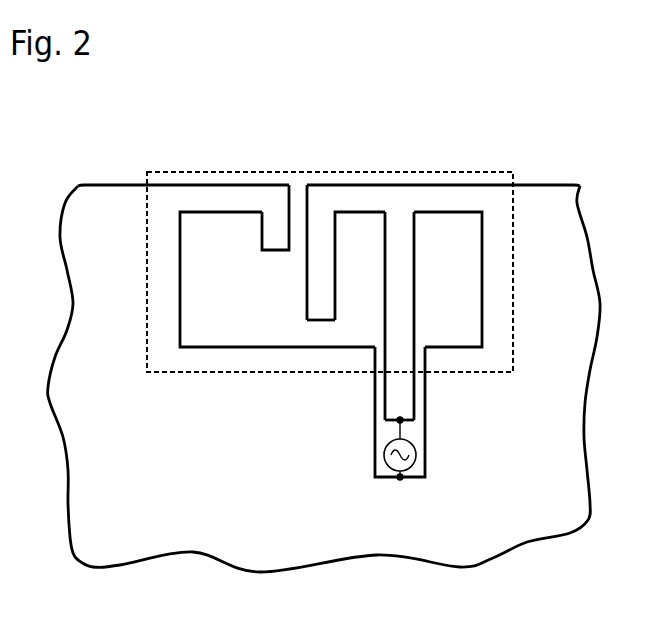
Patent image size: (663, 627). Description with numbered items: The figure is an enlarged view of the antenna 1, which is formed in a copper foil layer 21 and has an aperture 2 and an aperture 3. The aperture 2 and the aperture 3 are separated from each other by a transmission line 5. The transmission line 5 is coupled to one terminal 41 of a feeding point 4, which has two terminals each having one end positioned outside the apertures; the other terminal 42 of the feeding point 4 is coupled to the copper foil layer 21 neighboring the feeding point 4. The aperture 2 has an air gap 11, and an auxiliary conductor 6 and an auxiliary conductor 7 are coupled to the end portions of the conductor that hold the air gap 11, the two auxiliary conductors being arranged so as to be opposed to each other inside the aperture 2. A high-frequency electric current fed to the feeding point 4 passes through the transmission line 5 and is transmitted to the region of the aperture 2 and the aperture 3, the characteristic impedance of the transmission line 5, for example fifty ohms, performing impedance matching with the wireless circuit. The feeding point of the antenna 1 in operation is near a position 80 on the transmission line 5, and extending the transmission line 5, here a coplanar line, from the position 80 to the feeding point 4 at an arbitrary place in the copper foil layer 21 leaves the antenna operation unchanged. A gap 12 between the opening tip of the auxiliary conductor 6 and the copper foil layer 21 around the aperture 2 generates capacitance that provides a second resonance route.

The antenna 1 is at (441, 172).
The aperture 2 is at (200, 277).
The aperture 3 is at (466, 278).
The feeding point 4 is at (417, 455).
The transmission line 5 is at (400, 308).
The auxiliary conductor 6 is at (323, 262).
The auxiliary conductor 7 is at (272, 236).
The air gap 11 is at (302, 178).
The gap 12 is at (302, 328).
The copper foil layer 21 is at (324, 378).
The terminal 41 is at (375, 418).
The terminal 42 is at (378, 487).
The position 80 is at (410, 355).